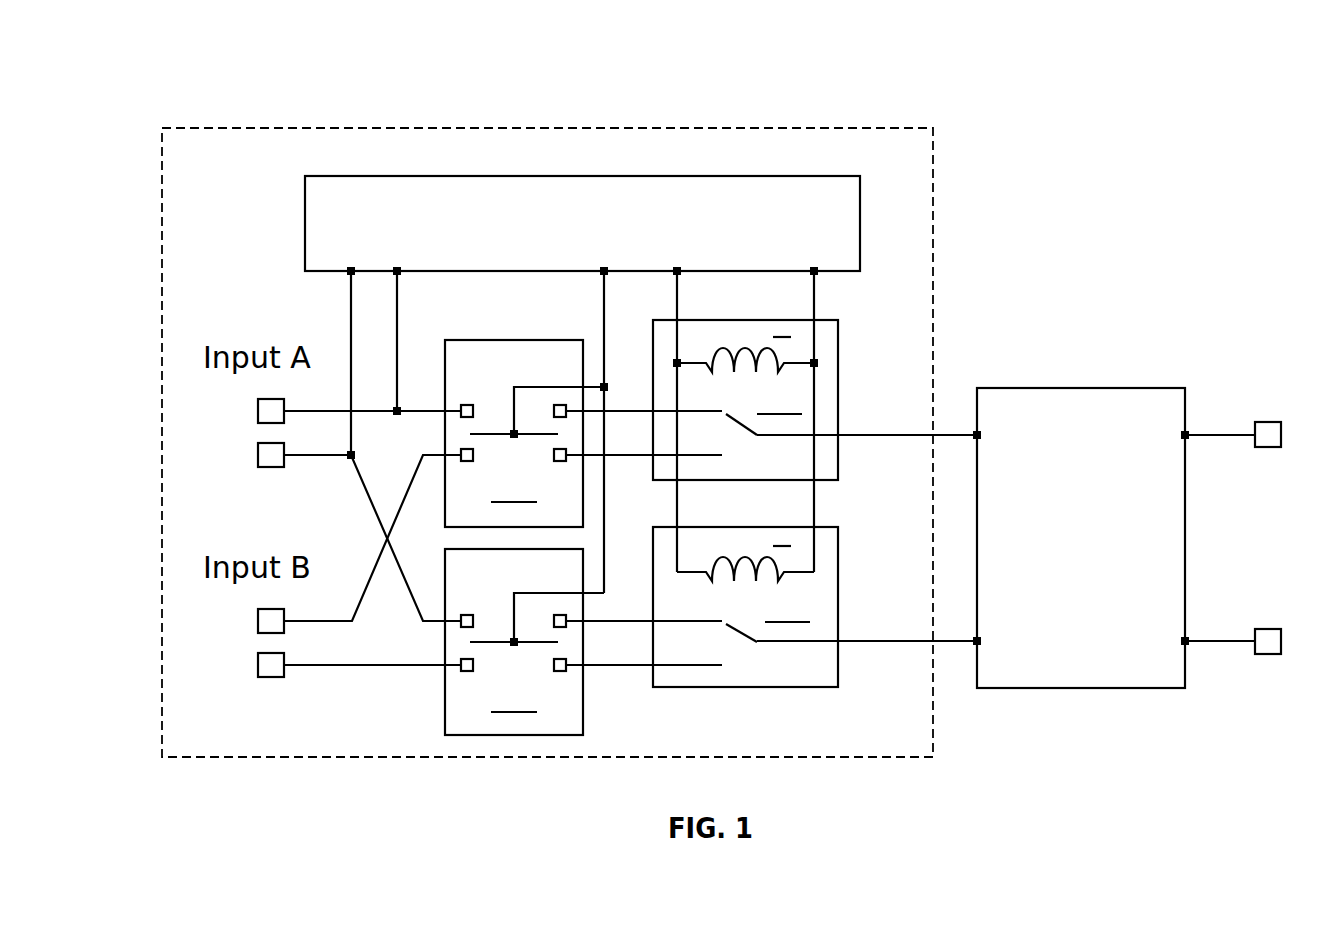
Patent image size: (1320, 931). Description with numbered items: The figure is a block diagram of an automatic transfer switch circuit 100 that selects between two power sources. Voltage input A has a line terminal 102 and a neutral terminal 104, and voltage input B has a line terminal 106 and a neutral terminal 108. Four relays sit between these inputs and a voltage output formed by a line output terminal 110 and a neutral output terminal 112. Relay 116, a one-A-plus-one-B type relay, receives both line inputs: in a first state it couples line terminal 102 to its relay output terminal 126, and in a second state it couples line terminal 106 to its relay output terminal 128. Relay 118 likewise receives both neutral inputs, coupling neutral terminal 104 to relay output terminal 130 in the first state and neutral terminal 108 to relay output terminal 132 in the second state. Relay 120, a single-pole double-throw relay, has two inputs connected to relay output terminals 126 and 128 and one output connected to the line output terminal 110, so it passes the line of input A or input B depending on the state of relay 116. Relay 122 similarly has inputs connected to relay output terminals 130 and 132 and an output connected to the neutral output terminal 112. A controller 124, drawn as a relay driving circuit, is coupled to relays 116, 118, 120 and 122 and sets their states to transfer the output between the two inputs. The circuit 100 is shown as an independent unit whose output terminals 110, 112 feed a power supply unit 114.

The automatic transfer switch circuit 100 is at (243, 85).
The line terminal 102 is at (258, 407).
The neutral terminal 104 is at (258, 452).
The line terminal 106 is at (258, 618).
The neutral terminal 108 is at (258, 662).
The line output terminal 110 is at (877, 434).
The neutral output terminal 112 is at (877, 640).
The power supply unit 114 is at (1046, 388).
The relay 116 is at (583, 411).
The relay 118 is at (583, 642).
The relay 120 is at (745, 400).
The relay 122 is at (745, 607).
The controller 124 is at (375, 176).
The relay output terminal 126 is at (560, 404).
The relay output terminal 128 is at (563, 462).
The relay output terminal 130 is at (563, 628).
The relay output terminal 132 is at (563, 672).